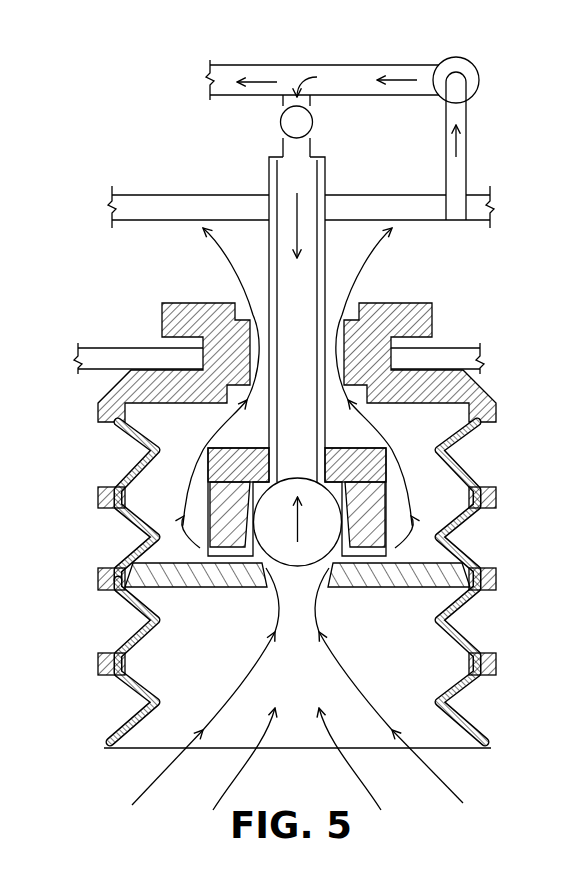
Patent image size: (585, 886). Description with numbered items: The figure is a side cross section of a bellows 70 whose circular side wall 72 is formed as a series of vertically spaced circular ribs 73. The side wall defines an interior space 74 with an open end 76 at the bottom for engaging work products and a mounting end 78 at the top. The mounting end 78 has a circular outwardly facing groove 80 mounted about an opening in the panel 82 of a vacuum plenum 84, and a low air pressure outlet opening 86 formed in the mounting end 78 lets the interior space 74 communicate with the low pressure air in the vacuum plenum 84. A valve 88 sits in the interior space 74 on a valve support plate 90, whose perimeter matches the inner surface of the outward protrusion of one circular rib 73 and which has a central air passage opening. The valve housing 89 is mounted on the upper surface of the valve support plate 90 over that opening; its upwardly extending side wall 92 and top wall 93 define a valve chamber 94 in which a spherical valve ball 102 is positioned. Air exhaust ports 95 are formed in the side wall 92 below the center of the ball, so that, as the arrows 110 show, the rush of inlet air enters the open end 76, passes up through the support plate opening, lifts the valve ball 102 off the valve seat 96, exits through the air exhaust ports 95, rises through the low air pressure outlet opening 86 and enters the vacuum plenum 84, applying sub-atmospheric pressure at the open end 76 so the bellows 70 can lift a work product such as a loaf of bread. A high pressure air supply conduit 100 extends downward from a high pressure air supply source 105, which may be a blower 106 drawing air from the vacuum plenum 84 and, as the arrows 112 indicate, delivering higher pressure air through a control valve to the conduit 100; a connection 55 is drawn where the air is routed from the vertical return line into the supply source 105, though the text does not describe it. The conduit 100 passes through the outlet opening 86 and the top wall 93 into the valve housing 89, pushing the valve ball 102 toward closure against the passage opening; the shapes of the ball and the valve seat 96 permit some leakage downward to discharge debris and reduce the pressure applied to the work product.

The connector 55 is at (472, 62).
The high pressure air supply source 105 is at (333, 80).
The arrows 112 is at (395, 78).
The blower 106 is at (313, 118).
The high pressure air supply conduit 100 is at (323, 262).
The vacuum plenum 84 is at (161, 259).
The mounting end 78 is at (160, 300).
The circular outwardly facing groove 80 is at (145, 347).
The panel 82 is at (102, 372).
The low air pressure outlet opening 86 is at (347, 315).
The bellows 70 is at (488, 345).
The valve 88 is at (342, 443).
The valve chamber 94 is at (248, 450).
The side wall 92 is at (222, 500).
The valve housing 89 is at (387, 507).
The spherical valve ball 102 is at (292, 548).
The valve support plate 90 is at (222, 590).
The valve seat 96 is at (330, 570).
The circular ribs 73 is at (118, 582).
The circular side wall 72 is at (122, 682).
The air exhaust ports 95 is at (143, 565).
The top wall 93 is at (217, 463).
The interior space 74 is at (206, 664).
The arrows 110 is at (242, 283).
The open end 76 is at (232, 732).